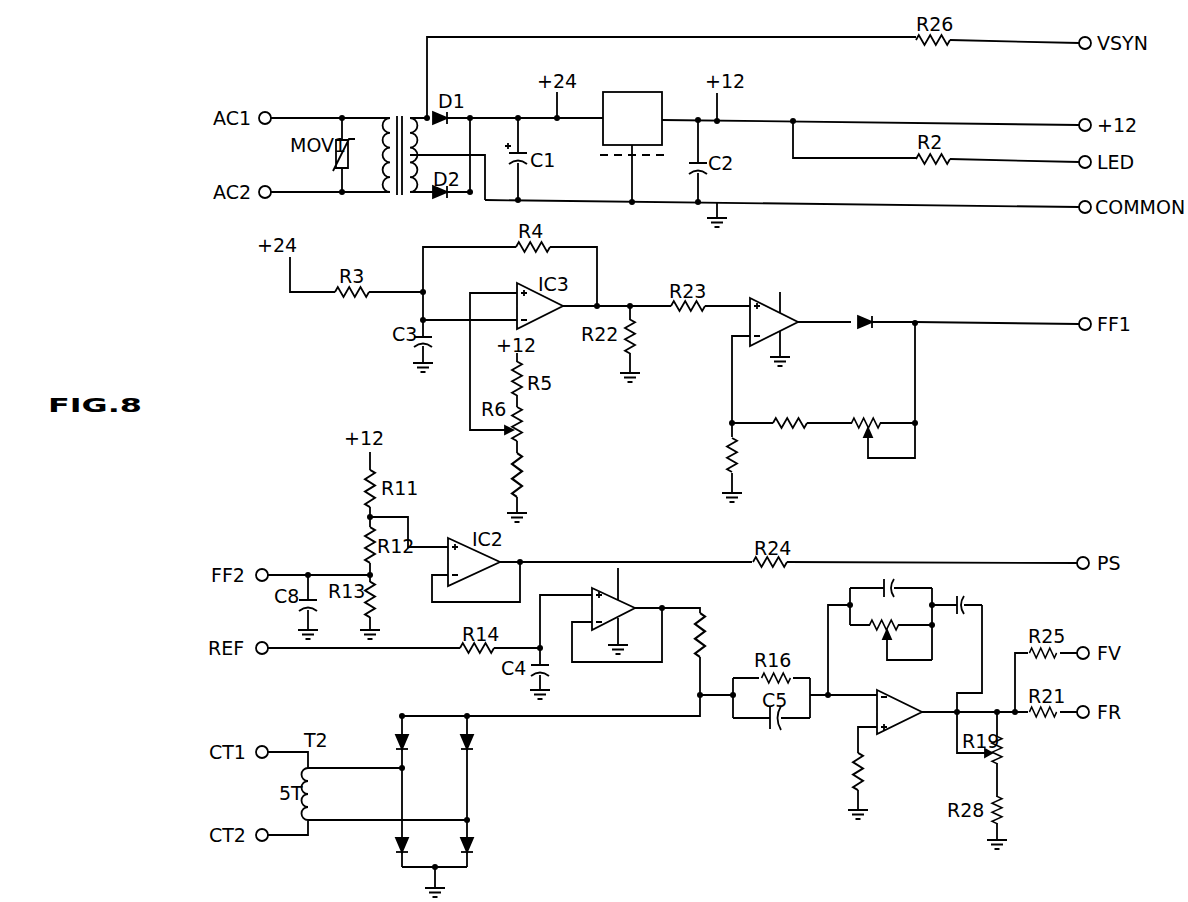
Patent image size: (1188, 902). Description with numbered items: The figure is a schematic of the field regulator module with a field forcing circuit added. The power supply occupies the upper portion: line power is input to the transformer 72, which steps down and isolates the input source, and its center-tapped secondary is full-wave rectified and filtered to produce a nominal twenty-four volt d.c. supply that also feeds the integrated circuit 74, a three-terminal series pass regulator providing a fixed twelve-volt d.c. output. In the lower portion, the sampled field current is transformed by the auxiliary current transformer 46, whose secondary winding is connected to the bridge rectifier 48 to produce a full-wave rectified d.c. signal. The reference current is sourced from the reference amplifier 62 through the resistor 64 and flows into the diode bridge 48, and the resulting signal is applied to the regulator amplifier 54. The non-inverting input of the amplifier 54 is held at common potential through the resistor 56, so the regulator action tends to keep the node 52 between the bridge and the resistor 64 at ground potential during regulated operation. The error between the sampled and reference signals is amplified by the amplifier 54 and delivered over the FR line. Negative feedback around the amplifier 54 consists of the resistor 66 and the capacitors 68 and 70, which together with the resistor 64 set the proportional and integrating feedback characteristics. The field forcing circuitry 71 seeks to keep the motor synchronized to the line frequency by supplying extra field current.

The transformer 46 is at (281, 750).
The bridge rectifier 48 is at (400, 716).
The node 52 is at (697, 695).
The regulator amplifier 54 is at (888, 728).
The resistor 56 is at (855, 767).
The reference amplifier 62 is at (623, 602).
The resistor 64 is at (703, 630).
The resistor 66 is at (871, 623).
The capacitor 68 is at (968, 605).
The capacitor 70 is at (894, 582).
The field forcing circuitry 71 is at (977, 403).
The transformer 72 is at (385, 105).
The integrated circuit 74 is at (605, 92).